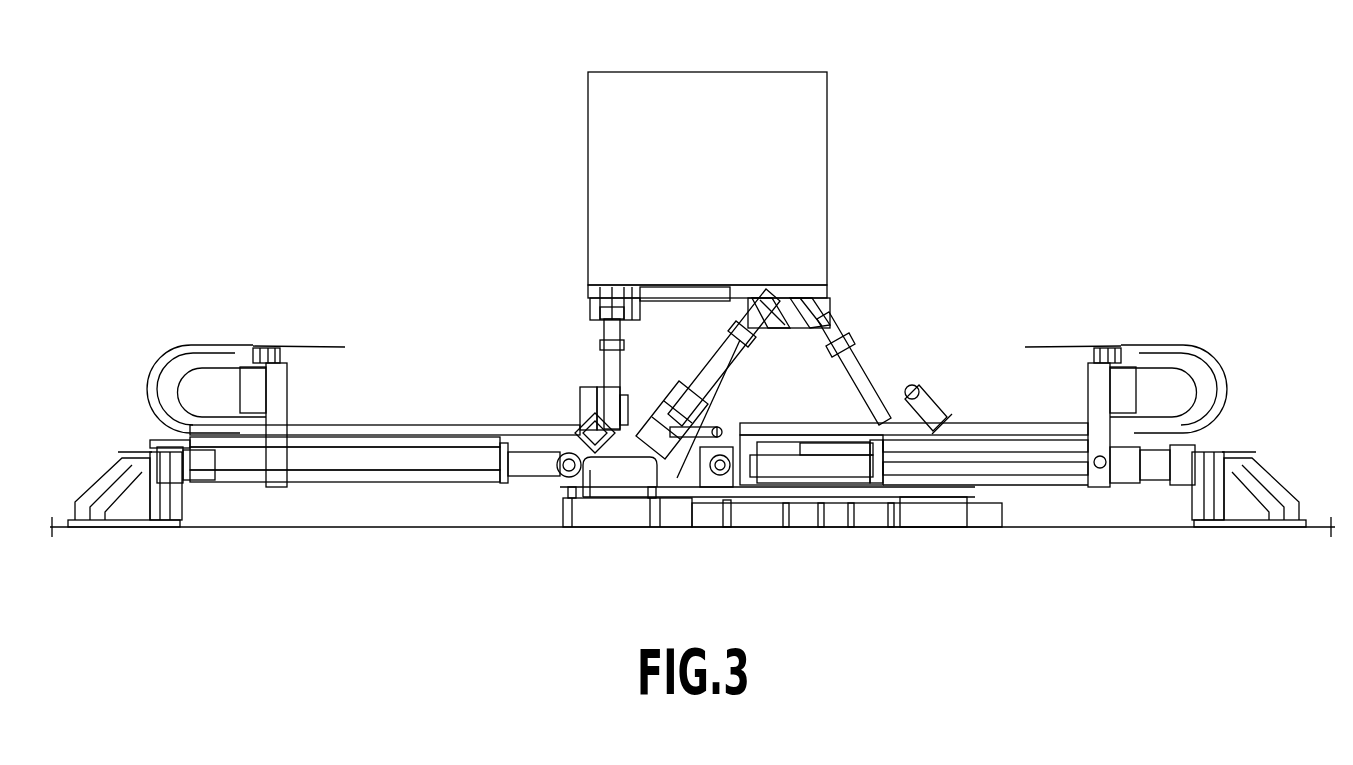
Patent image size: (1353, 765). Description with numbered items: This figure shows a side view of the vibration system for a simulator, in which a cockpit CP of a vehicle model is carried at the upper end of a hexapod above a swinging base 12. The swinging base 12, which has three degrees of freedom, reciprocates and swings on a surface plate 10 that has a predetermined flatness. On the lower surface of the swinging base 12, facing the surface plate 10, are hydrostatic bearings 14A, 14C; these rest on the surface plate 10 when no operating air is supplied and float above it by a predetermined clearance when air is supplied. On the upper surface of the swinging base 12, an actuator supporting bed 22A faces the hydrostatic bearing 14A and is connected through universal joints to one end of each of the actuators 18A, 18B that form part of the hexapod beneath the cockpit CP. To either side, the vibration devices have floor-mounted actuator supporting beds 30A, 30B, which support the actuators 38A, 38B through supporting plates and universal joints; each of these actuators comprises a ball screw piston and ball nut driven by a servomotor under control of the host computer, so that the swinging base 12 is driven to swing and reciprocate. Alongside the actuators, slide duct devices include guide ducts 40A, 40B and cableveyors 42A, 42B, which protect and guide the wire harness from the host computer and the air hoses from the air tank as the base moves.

The surface plate 10 is at (1098, 534).
The cockpit CP is at (829, 158).
The swinging base 12 is at (956, 498).
The hydrostatic bearing 14A is at (640, 524).
The hydrostatic bearing 14C is at (932, 528).
The actuator 18A is at (724, 360).
The actuator 18B is at (610, 366).
The actuator supporting bed 22A is at (586, 478).
The actuator supporting bed 30A is at (1249, 508).
The actuator supporting bed 30B is at (125, 508).
The actuator 38A is at (1055, 470).
The actuator 38B is at (372, 470).
The guide duct 40A is at (1053, 430).
The guide duct 40B is at (377, 435).
The cableveyor 42A is at (1165, 348).
The cableveyor 42B is at (200, 348).